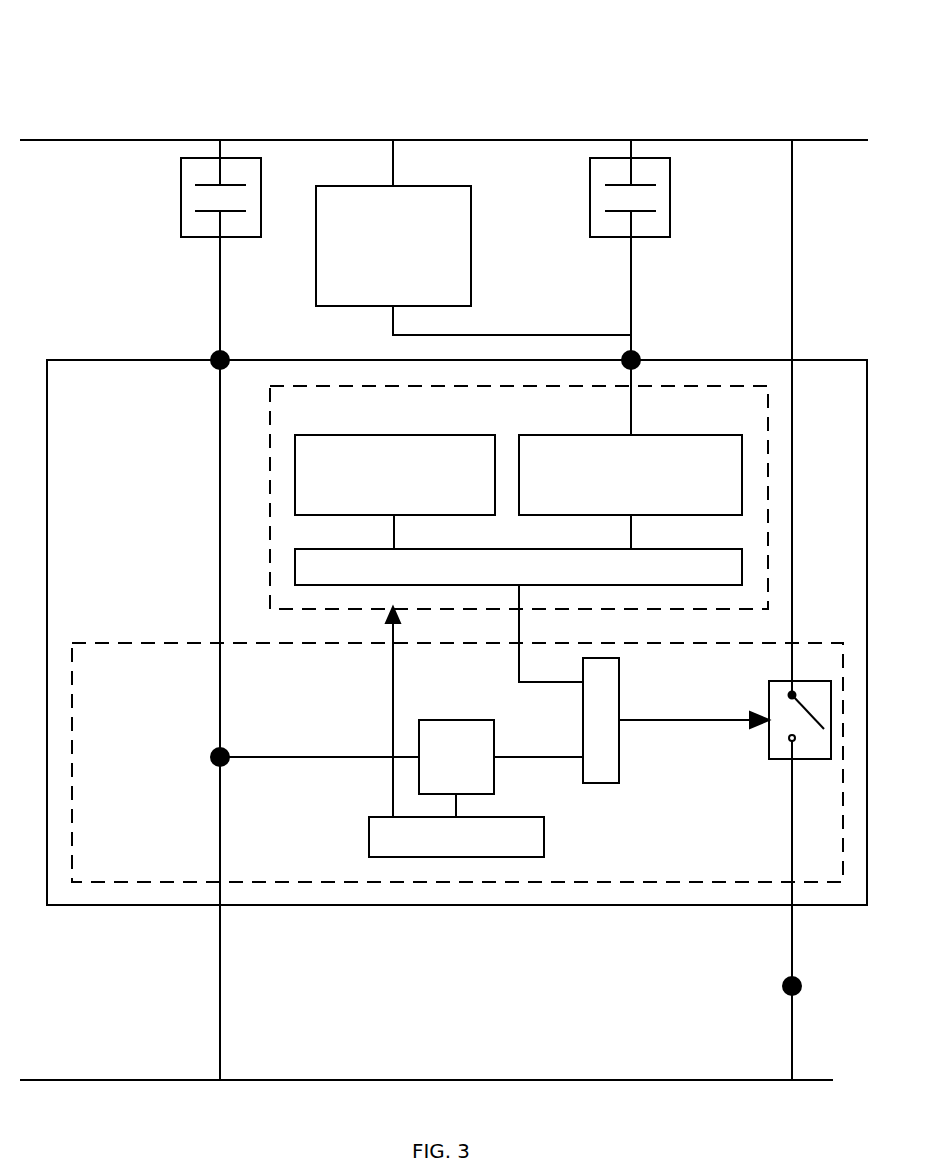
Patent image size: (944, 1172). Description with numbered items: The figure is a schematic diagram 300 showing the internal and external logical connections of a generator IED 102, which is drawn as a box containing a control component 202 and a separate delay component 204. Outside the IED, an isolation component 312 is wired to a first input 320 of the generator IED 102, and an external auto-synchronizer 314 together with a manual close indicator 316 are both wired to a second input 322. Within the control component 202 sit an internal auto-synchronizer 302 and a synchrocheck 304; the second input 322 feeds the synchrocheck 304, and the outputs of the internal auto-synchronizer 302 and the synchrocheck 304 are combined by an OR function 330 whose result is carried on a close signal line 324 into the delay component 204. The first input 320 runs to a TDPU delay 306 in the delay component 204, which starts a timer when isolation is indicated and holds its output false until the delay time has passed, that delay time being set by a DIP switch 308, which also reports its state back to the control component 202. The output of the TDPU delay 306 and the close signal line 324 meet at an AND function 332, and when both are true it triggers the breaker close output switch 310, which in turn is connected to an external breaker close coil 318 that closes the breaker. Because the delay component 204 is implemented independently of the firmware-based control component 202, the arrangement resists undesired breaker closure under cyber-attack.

The schematic diagram 300 is at (104, 58).
The isolation component 312 is at (181, 198).
The external auto-synchronizer 314 is at (408, 293).
The manual close indicator 316 is at (672, 198).
The first input 320 is at (214, 355).
The second input 322 is at (638, 354).
The generator IED 102 is at (147, 444).
The control component 202 is at (520, 418).
The internal auto-synchronizer 302 is at (408, 510).
The synchrocheck 304 is at (645, 497).
The OR function 330 is at (295, 565).
The close signal line 324 is at (519, 626).
The delay component 204 is at (163, 729).
The TDPU delay 306 is at (456, 720).
The DIP switch 308 is at (544, 838).
The AND function 332 is at (583, 719).
The breaker close output switch 310 is at (771, 762).
The breaker close coil 318 is at (783, 986).